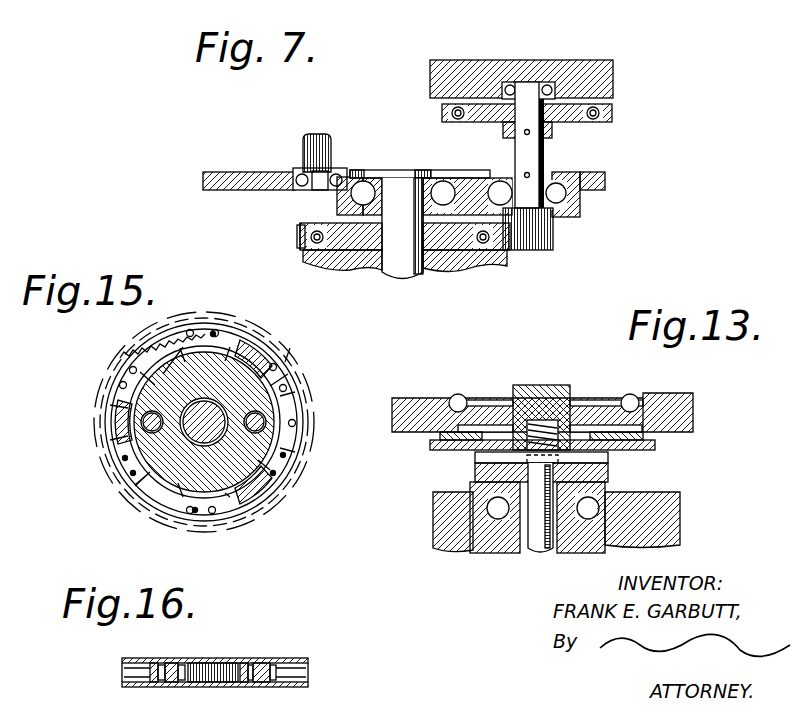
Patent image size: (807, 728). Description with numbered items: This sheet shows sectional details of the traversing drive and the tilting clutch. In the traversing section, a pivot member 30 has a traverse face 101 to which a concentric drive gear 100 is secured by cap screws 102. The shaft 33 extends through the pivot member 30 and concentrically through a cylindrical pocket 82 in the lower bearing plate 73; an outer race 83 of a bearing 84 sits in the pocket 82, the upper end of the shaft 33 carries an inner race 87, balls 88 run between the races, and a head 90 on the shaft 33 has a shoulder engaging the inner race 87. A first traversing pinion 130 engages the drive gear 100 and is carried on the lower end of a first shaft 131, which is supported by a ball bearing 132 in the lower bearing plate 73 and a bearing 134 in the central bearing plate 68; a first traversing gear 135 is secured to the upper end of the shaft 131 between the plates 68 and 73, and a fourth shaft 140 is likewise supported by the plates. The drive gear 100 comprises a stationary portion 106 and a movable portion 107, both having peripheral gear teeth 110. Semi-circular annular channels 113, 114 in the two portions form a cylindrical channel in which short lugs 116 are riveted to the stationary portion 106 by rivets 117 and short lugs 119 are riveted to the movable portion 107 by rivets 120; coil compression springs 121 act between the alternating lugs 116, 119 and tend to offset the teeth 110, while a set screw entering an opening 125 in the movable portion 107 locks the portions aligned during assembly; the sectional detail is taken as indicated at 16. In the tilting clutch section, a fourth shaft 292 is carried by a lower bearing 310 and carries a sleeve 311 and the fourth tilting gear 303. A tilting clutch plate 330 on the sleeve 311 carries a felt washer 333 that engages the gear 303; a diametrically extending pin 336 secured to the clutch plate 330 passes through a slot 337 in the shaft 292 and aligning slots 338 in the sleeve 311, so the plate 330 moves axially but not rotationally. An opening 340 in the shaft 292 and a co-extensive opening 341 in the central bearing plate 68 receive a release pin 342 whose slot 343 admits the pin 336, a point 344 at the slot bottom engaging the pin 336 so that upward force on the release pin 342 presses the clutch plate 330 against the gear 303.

In FIG. 7, the central bearing plate 68 is at (463, 73).
In FIG. 13, the central bearing plate 68 is at (663, 518).
In FIG. 7, the bearing 134 is at (551, 85).
In FIG. 7, the first traversing gear 135 is at (612, 110).
In FIG. 7, the first shaft 131 is at (547, 158).
In FIG. 7, the plate 73 is at (222, 180).
In FIG. 7, the fourth shaft 140 is at (316, 137).
In FIG. 7, the concentric cylindrical pocket 82 is at (348, 178).
In FIG. 7, the bearing 84 is at (370, 184).
In FIG. 7, the head 90 is at (415, 176).
In FIG. 7, the balls 88 is at (450, 183).
In FIG. 7, the ball bearing 132 is at (605, 177).
In FIG. 7, the inner race 87 is at (402, 228).
In FIG. 7, the drive gear 100 is at (296, 226).
In FIG. 15, the drive gear 100 is at (280, 405).
In FIG. 7, the movable portion 107 is at (298, 243).
In FIG. 15, the movable portion 107 is at (290, 380).
In FIG. 16, the movable portion 107 is at (305, 686).
In FIG. 7, the outer race 83 is at (352, 192).
In FIG. 7, the first traversing pinion 130 is at (553, 232).
In FIG. 7, the pivot member 30 is at (470, 256).
In FIG. 7, the shaft 33 is at (400, 262).
In FIG. 15, the shaft 33 is at (198, 432).
In FIG. 7, the traverse face 101 is at (440, 252).
In FIG. 15, the gear teeth 110 is at (160, 330).
In FIG. 15, the cap screws 102 is at (143, 420).
In FIG. 15, the stationary portion 106 is at (250, 430).
In FIG. 16, the stationary portion 106 is at (290, 658).
In FIG. 15, the segment 16 is at (202, 417).
In FIG. 15, the short lugs 119 is at (130, 372).
In FIG. 16, the short lugs 119 is at (262, 660).
In FIG. 15, the rivets 120 is at (120, 386).
In FIG. 16, the rivets 120 is at (252, 683).
In FIG. 15, the opening 125 is at (296, 420).
In FIG. 15, the short lugs 116 is at (214, 332).
In FIG. 16, the short lugs 116 is at (162, 682).
In FIG. 15, the rivets 117 is at (230, 340).
In FIG. 16, the rivets 117 is at (183, 662).
In FIG. 15, the coil compression springs 121 is at (252, 352).
In FIG. 16, the coil compression springs 121 is at (215, 683).
In FIG. 16, the annular channel 114 is at (138, 678).
In FIG. 16, the annular channel 113 is at (152, 660).
In FIG. 13, the fourth tilting gear 303 is at (693, 412).
In FIG. 13, the slot 337 is at (570, 400).
In FIG. 13, the felt washer 333 is at (655, 395).
In FIG. 13, the aligning slots 338 is at (503, 398).
In FIG. 13, the slot 343 is at (545, 420).
In FIG. 13, the fourth shaft 292 is at (548, 386).
In FIG. 13, the tilting clutch plate 330 is at (655, 445).
In FIG. 13, the diametrically extending pin 336 is at (608, 458).
In FIG. 13, the sleeve 311 is at (475, 472).
In FIG. 13, the point 344 is at (475, 505).
In FIG. 13, the opening 340 is at (528, 540).
In FIG. 13, the opening 341 is at (548, 552).
In FIG. 13, the release pin 342 is at (542, 553).
In FIG. 13, the lower bearing 310 is at (522, 490).